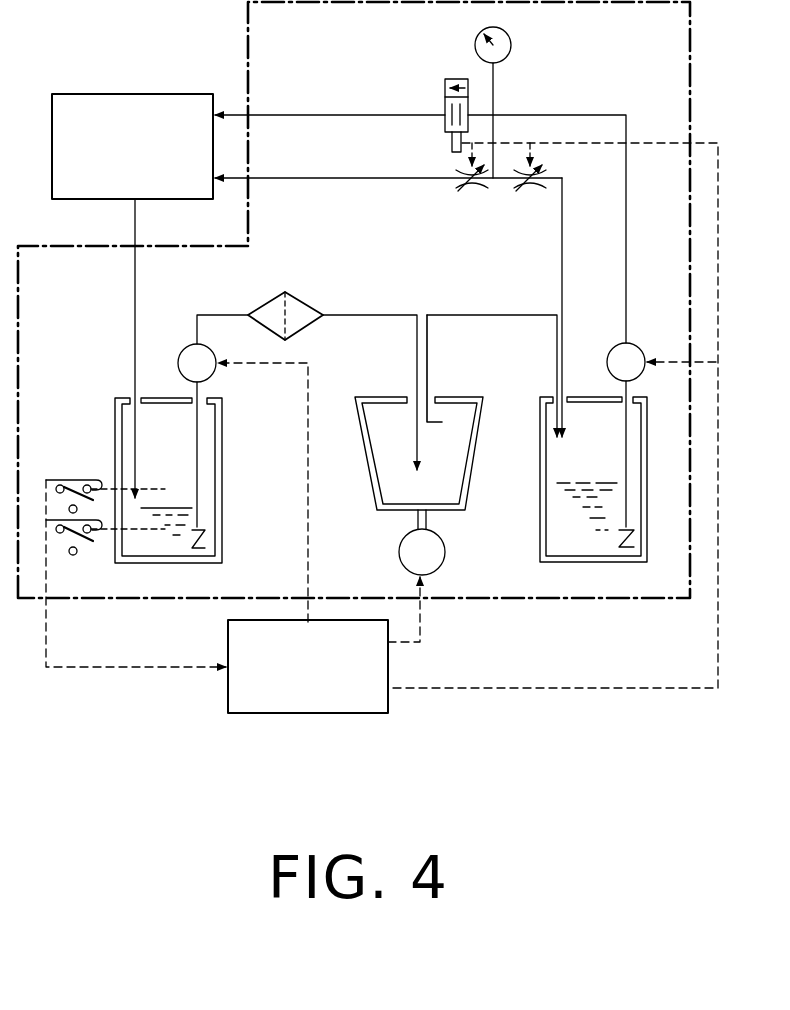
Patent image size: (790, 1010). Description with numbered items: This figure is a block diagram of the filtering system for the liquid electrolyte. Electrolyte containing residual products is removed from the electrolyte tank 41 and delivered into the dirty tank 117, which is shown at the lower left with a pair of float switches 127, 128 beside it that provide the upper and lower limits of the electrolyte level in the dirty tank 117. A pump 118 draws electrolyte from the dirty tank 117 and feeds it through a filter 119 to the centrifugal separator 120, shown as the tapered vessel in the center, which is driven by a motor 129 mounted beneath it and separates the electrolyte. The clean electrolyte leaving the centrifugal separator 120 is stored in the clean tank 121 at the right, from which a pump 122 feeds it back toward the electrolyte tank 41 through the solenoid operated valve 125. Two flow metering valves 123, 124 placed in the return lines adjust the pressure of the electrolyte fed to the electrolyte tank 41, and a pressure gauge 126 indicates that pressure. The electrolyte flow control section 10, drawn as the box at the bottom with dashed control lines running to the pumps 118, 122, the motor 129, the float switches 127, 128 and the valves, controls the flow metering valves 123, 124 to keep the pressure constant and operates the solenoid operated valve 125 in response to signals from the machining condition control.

The electrolyte tank 41 is at (198, 92).
The electrolyte flow control section 10 is at (228, 706).
The dirty tank 117 is at (244, 472).
The pump 118 is at (182, 349).
The filter 119 is at (307, 305).
The centrifugal separator 120 is at (466, 495).
The clean tank 121 is at (538, 403).
The pump 122 is at (663, 333).
The flow metering valve 123 is at (532, 199).
The flow metering valve 124 is at (470, 199).
The solenoid operated valve 125 is at (445, 80).
The pressure gauge 126 is at (511, 42).
The float switch 127 is at (92, 458).
The float switch 128 is at (85, 544).
The motor 129 is at (441, 563).